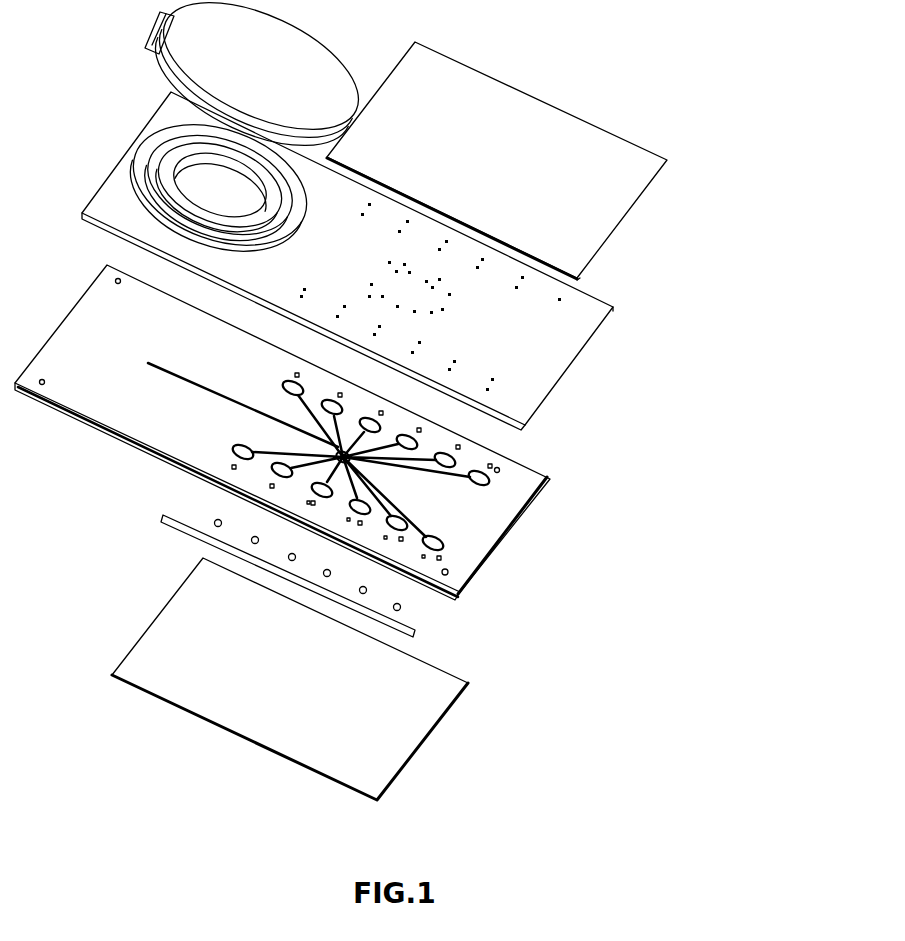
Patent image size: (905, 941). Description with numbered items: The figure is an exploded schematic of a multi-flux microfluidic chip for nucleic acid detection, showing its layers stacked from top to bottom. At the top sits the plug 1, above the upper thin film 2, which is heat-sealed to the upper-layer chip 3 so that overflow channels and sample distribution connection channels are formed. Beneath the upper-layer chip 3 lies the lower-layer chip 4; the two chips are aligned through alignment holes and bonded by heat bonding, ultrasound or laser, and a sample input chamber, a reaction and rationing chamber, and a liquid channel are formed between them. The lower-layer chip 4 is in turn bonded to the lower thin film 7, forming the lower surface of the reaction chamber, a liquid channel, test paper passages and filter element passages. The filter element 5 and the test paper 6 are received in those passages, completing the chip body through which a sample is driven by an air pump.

The plug 1 is at (255, 14).
The upper thin film 2 is at (607, 175).
The upper-layer chip 3 is at (567, 325).
The lower-layer chip 4 is at (498, 502).
The filter element 5 is at (331, 572).
The test paper 6 is at (415, 632).
The lower thin film 7 is at (410, 745).